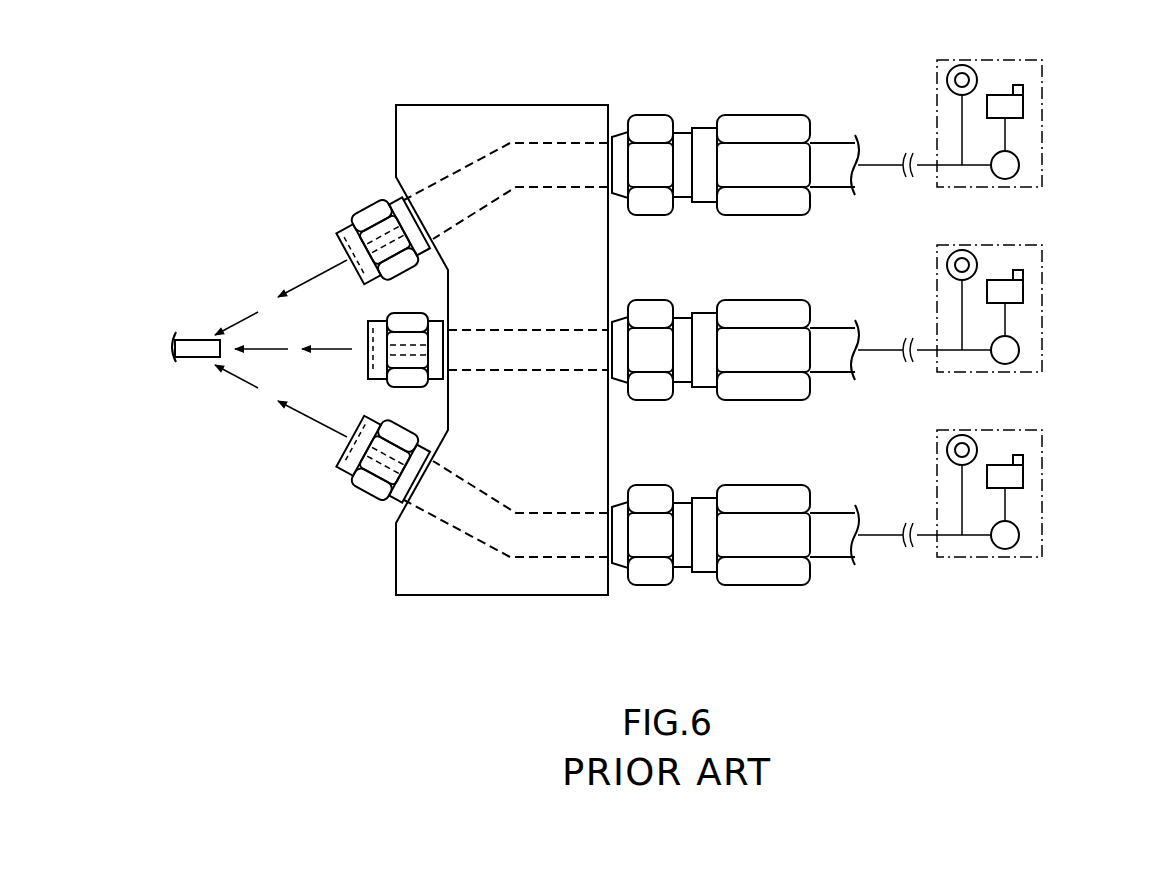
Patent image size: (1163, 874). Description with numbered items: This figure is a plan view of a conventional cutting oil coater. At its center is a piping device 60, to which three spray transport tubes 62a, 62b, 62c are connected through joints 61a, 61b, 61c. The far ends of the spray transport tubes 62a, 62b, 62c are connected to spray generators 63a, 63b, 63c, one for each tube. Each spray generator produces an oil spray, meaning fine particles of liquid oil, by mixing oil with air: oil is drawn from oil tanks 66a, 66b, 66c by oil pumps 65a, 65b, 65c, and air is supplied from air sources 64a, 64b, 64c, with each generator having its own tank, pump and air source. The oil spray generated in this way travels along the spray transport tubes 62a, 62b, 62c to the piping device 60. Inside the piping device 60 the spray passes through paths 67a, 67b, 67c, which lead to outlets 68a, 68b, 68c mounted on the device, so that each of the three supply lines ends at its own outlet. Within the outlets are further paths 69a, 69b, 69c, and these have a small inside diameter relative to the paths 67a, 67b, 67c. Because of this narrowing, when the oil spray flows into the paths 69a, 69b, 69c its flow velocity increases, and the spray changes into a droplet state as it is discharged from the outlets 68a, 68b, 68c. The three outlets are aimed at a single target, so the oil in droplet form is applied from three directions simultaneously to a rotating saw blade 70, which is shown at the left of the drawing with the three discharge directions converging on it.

The nozzle body block 60 is at (521, 76).
The pipe connector 61a is at (782, 70).
The pipe connector 61b is at (782, 255).
The pipe connector 61c is at (782, 440).
The supply pipe 62a is at (821, 143).
The supply pipe 62b is at (821, 328).
The supply pipe 62c is at (821, 513).
The fluid supply unit 63a is at (1043, 69).
The fluid supply unit 63b is at (1043, 254).
The fluid supply unit 63c is at (1043, 439).
The fluid tank 64a is at (946, 82).
The fluid tank 64b is at (946, 267).
The fluid tank 64c is at (946, 452).
The pump 65a is at (1020, 165).
The pump 65b is at (1020, 350).
The pump 65c is at (1020, 535).
The control valve 66a is at (1024, 107).
The control valve 66b is at (1024, 292).
The control valve 66c is at (1024, 477).
The fluid channel 67a is at (535, 182).
The fluid channel 67b is at (535, 366).
The fluid channel 67c is at (535, 551).
The spray nozzle 68a is at (379, 210).
The spray nozzle 68b is at (402, 378).
The spray nozzle 68c is at (378, 492).
The spray hole 69a is at (350, 230).
The spray hole 69b is at (380, 343).
The spray hole 69c is at (347, 470).
The spray target 70 is at (190, 340).